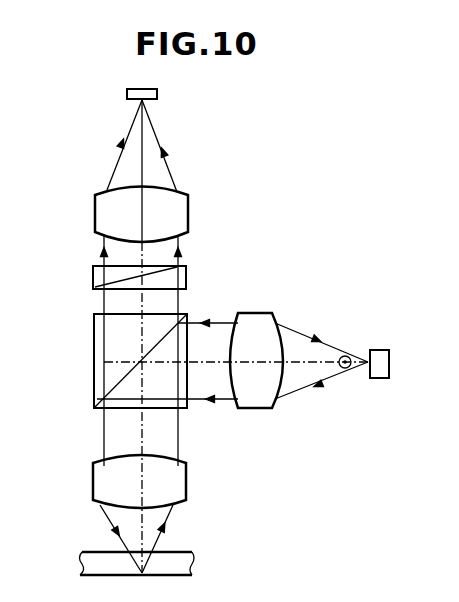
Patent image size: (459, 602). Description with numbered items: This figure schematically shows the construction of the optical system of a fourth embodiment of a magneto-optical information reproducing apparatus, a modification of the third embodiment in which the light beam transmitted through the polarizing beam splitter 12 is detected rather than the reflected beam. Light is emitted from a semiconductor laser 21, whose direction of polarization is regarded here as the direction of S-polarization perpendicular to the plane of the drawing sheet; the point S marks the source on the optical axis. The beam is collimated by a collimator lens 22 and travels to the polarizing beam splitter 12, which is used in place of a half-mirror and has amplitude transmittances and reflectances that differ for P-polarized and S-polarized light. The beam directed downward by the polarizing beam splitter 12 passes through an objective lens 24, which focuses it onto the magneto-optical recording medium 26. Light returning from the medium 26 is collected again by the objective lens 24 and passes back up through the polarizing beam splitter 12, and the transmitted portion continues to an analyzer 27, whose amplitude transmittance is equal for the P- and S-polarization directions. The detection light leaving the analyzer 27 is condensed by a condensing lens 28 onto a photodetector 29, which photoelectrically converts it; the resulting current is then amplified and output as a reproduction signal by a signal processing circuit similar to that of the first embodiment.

The polarizing beam splitter 12 is at (94, 340).
The semiconductor laser 21 is at (378, 350).
The collimator lens 22 is at (250, 313).
The objective lens 24 is at (100, 482).
The magneto-optical recording medium 26 is at (92, 556).
The analyzer 27 is at (93, 277).
The condensing lens 28 is at (95, 210).
The photodetector 29 is at (127, 93).
The light source point S is at (349, 380).